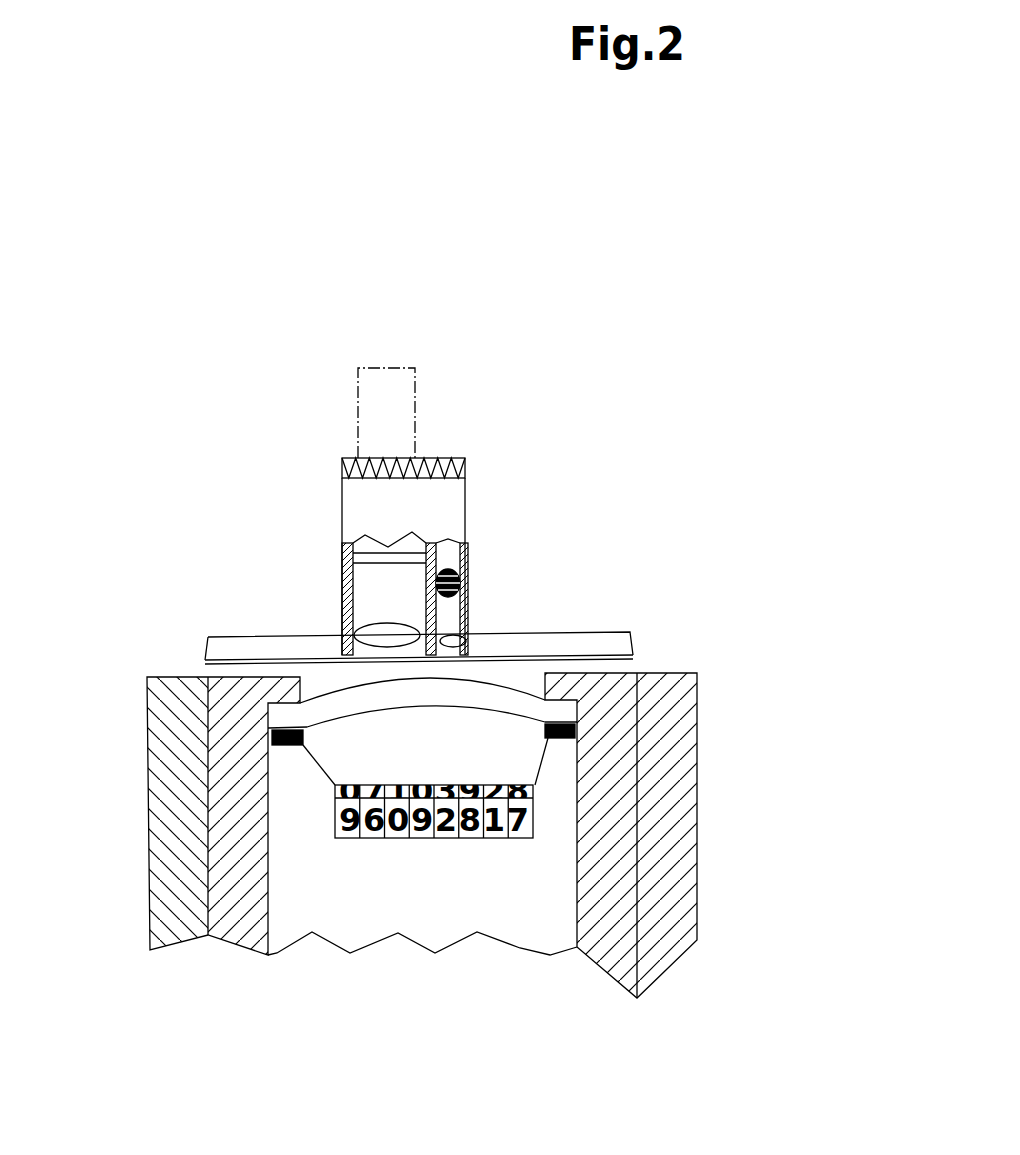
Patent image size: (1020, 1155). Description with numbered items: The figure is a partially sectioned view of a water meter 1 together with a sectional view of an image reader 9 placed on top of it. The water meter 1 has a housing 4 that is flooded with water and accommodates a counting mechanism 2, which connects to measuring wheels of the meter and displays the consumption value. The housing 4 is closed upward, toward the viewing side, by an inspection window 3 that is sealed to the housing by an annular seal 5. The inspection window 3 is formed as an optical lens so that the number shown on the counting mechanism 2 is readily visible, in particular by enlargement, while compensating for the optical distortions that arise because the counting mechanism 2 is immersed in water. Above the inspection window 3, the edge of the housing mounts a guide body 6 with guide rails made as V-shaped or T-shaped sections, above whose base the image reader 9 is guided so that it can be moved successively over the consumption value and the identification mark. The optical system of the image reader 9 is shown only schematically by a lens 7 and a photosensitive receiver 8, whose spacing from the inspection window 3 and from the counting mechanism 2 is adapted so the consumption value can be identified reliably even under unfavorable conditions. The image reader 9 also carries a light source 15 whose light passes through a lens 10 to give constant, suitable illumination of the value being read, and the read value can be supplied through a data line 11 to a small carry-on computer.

The water meter 1 is at (700, 715).
The counting mechanism 2 is at (685, 785).
The inspection window 3 is at (330, 707).
The housing 4 is at (710, 876).
The annular seal 5 is at (240, 815).
The guide body 6 is at (563, 633).
The lens 7 is at (343, 553).
The photosensitive receiver 8 is at (379, 501).
The image reader 9 is at (503, 509).
The lens 10 is at (519, 577).
The data line 11 is at (380, 368).
The light source 15 is at (435, 536).